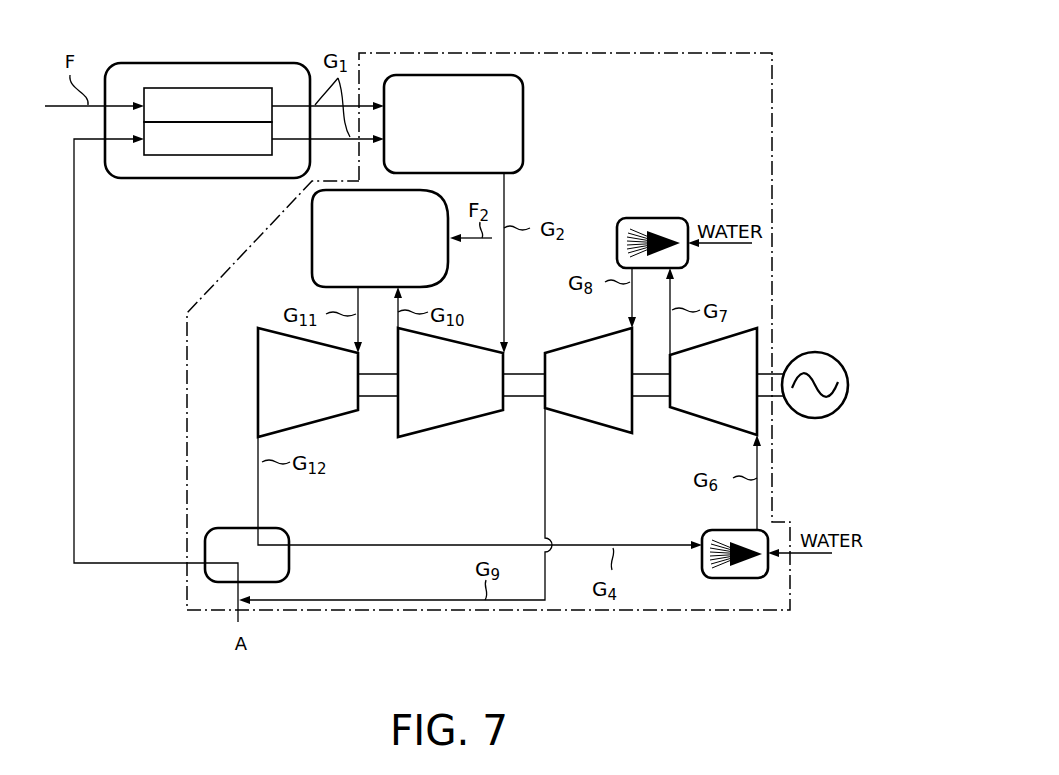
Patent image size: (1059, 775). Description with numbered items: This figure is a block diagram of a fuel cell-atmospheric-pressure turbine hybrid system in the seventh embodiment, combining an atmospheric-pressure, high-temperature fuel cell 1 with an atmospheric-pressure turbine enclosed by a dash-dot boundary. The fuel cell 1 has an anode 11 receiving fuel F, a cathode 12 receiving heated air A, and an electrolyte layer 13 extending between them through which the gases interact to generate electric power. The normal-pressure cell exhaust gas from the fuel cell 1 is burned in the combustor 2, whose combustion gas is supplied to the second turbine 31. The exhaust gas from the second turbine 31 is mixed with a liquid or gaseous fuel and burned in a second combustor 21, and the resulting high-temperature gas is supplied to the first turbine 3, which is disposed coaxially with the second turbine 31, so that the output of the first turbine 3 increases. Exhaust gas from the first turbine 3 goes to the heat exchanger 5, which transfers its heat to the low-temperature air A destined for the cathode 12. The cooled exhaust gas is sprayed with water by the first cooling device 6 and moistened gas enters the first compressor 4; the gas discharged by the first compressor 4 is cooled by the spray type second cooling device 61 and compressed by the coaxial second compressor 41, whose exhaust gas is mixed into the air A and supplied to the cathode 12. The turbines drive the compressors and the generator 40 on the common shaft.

The fuel cell 1 is at (162, 180).
The anode 11 is at (175, 88).
The cathode 12 is at (242, 156).
The electrolyte layer 13 is at (262, 118).
The combustor 2 is at (523, 110).
The second combustor 21 is at (310, 248).
The first turbine 3 is at (258, 363).
The second turbine 31 is at (467, 421).
The first compressor 4 is at (741, 330).
The second compressor 41 is at (583, 420).
The generator 40 is at (818, 418).
The heat exchanger 5 is at (222, 528).
The first cooling device 6 is at (730, 578).
The second cooling device 61 is at (660, 218).